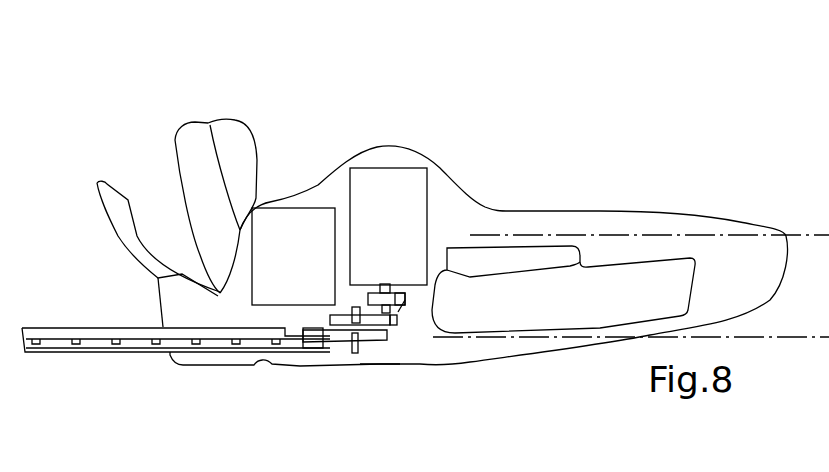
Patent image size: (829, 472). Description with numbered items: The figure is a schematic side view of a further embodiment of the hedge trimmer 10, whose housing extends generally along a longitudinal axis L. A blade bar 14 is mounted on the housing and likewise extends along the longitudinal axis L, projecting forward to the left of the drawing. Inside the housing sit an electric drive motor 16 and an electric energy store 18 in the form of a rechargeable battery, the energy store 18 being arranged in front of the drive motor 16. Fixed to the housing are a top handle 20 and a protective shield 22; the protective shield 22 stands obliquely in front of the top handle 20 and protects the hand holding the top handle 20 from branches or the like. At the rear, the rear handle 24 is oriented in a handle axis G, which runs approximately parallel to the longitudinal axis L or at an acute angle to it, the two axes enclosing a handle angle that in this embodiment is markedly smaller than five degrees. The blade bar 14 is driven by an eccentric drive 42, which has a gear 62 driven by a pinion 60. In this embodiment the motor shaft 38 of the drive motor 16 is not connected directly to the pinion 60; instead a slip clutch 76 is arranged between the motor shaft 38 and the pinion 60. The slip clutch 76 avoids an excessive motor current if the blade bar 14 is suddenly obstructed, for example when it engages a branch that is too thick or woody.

The hedge trimmer 10 is at (622, 120).
The blade bar 14 is at (65, 352).
The electric drive motor 16 is at (378, 222).
The electric energy store 18 is at (280, 282).
The top handle 20 is at (227, 132).
The protective shield 22 is at (98, 183).
The rear handle 24 is at (620, 255).
The motor shaft 38 is at (388, 290).
The eccentric drive 42 is at (378, 374).
The pinion 60 is at (392, 320).
The gear 62 is at (315, 345).
The slip clutch 76 is at (405, 300).
The handle axis G is at (813, 232).
The longitudinal axis L is at (801, 343).